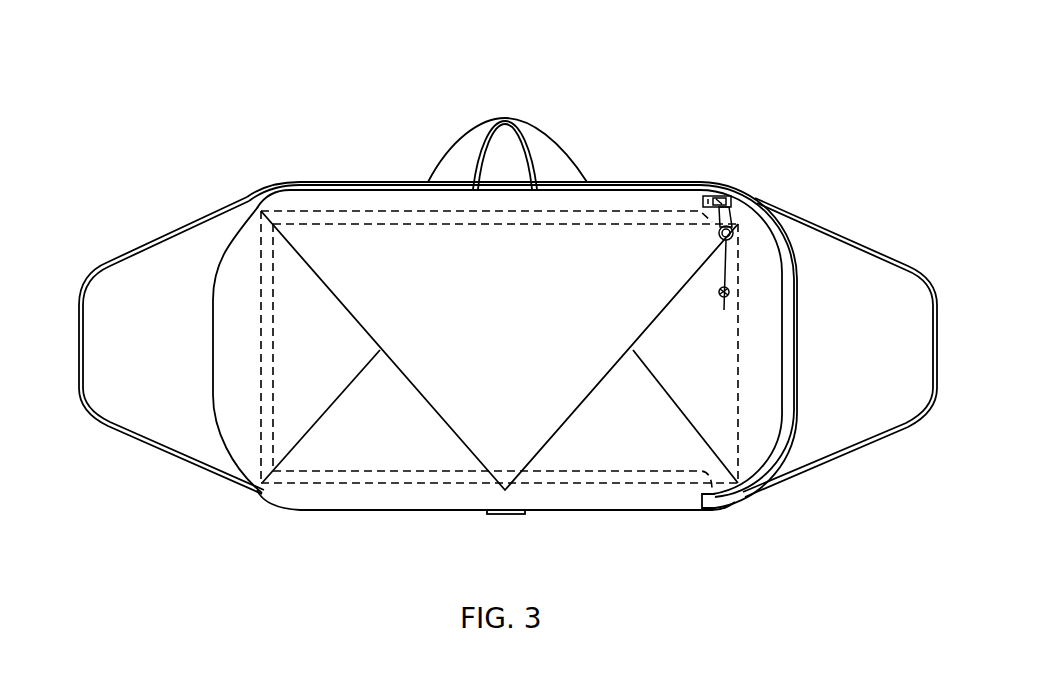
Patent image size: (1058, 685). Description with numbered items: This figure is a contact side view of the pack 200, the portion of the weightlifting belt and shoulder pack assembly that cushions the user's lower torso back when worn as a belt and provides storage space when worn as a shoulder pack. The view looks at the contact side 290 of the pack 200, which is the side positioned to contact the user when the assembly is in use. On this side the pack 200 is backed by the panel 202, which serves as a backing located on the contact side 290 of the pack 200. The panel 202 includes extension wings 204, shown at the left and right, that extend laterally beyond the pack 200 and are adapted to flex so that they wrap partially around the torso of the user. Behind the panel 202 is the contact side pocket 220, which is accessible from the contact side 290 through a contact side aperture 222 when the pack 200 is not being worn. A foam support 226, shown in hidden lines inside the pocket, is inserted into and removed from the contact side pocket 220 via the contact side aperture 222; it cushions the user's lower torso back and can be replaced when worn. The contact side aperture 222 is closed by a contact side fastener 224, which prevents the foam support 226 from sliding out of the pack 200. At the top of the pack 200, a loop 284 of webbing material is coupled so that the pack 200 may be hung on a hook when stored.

The pack 200 is at (699, 160).
The panel 202 is at (310, 511).
The extension wings 204 is at (80, 373).
The contact side pocket 220 is at (630, 485).
The contact side aperture 222 is at (770, 457).
The contact side fastener 224 is at (737, 196).
The foam support 226 is at (381, 472).
The loop 284 is at (541, 147).
The contact side 290 is at (240, 187).